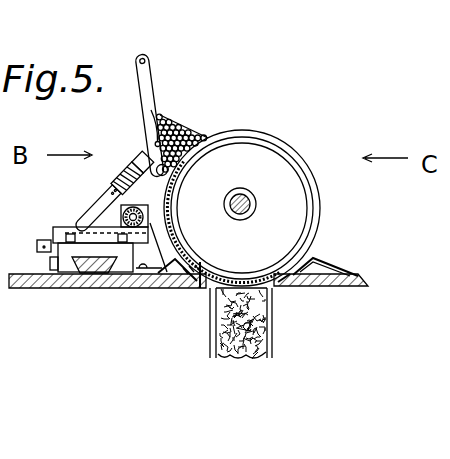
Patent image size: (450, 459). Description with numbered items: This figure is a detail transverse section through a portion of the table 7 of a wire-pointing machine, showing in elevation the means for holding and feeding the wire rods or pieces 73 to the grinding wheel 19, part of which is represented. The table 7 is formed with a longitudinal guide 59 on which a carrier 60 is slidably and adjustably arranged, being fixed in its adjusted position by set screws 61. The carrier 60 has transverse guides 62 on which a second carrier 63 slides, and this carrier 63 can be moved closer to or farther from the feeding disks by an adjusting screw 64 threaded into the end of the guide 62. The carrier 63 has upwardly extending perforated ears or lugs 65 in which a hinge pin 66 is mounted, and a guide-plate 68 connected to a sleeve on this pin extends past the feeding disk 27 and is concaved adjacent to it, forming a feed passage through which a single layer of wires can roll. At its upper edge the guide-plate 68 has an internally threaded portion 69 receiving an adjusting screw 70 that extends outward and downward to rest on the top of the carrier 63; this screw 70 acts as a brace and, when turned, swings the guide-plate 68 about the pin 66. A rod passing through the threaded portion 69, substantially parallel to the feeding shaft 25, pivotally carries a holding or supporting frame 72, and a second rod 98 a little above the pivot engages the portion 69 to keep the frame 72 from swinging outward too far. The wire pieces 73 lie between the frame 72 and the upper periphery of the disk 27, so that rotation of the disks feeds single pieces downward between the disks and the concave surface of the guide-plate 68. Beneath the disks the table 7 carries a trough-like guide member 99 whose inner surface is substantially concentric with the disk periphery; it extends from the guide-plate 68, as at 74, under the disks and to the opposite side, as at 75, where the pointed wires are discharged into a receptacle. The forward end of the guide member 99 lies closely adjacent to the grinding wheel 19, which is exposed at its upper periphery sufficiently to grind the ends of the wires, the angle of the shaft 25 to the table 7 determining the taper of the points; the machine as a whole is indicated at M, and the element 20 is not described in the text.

The table 7 is at (52, 257).
The grinding wheel 19 is at (269, 340).
The support plate 20 is at (300, 284).
The feeding shaft 25 is at (257, 205).
The feeding disk 27 is at (257, 133).
The longitudinal guide 59 is at (128, 290).
The carrier 60 is at (68, 265).
The set screws 61 is at (53, 262).
The transverse guides 62 is at (80, 226).
The second carrier 63 is at (58, 228).
The adjusting screw 64 is at (43, 241).
The ears or lugs 65 is at (137, 204).
The hinge pin 66 is at (150, 217).
The guide-plate 68 is at (165, 272).
The screw-threaded portion 69 is at (146, 155).
The adjusting screw 70 is at (121, 173).
The holding or supporting frame 72 is at (152, 76).
The wire rods or pieces 73 is at (185, 125).
The extension of guide member 74 is at (201, 262).
The delivery portion 75 is at (318, 262).
The second rod 98 is at (158, 112).
The trough-like guide member 99 is at (284, 278).
The machine M is at (20, 288).